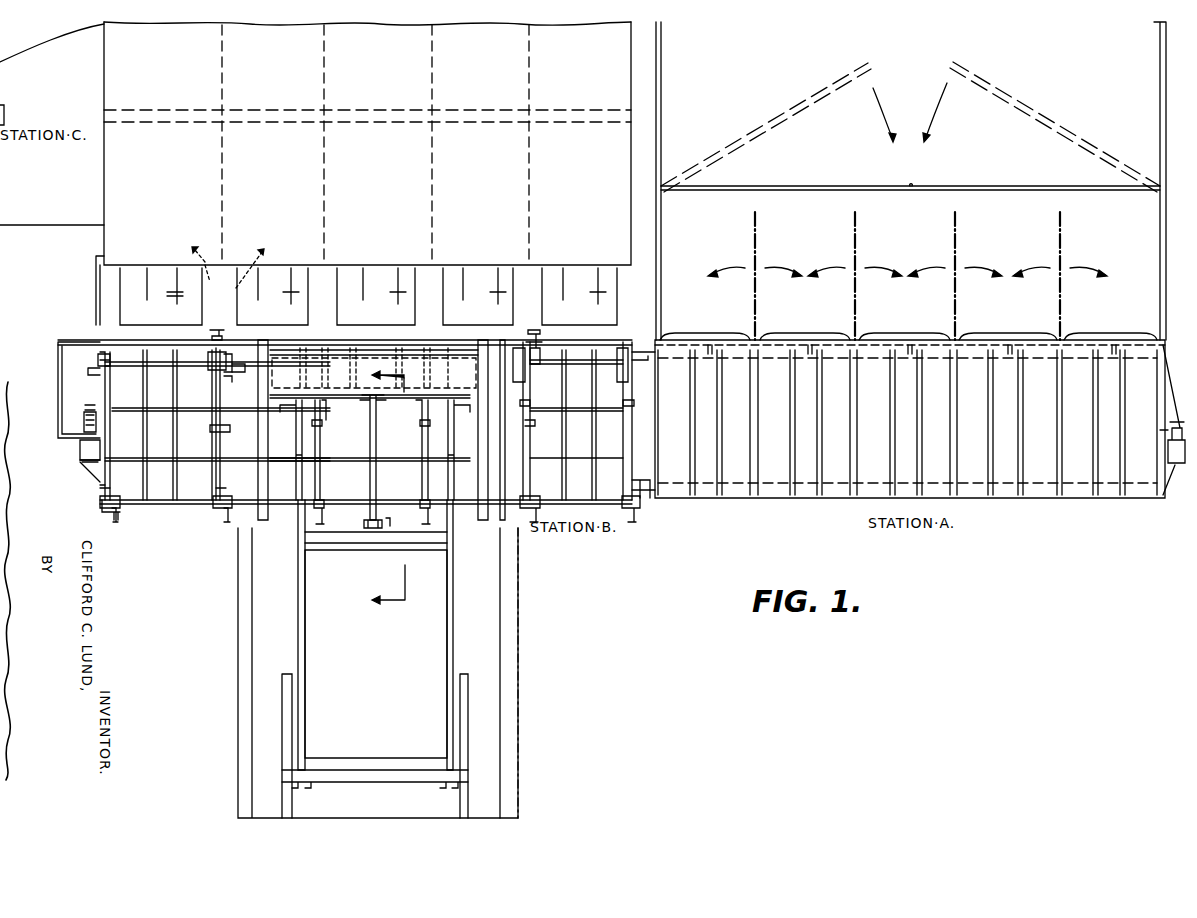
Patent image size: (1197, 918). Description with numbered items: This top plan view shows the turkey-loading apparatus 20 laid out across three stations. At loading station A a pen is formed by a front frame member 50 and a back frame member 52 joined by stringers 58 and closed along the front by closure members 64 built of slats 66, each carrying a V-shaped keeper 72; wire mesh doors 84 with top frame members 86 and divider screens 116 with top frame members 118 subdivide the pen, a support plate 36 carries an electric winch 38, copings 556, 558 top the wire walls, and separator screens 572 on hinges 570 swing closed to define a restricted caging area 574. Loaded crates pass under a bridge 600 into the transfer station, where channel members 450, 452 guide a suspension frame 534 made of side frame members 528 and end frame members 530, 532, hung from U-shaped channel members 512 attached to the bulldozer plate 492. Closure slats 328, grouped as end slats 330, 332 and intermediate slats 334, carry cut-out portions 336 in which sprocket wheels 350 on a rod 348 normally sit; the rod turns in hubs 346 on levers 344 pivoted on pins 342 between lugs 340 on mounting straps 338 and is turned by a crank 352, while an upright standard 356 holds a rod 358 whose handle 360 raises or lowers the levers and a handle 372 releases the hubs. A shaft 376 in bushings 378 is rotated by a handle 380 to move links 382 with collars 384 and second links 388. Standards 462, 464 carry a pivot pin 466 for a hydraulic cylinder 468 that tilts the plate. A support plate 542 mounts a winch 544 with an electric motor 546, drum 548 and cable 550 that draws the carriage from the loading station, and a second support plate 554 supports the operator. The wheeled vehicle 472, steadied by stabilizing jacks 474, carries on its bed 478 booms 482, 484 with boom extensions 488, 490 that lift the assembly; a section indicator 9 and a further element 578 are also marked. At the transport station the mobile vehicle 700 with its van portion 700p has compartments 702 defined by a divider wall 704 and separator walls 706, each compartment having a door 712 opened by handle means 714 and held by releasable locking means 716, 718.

The mobile vehicle 700 is at (74, 230).
The van portion 700p is at (100, 242).
The vertical divider wall 704 is at (344, 125).
The separator walls 706 is at (528, 178).
The compartments 702 is at (228, 275).
The handle means 714 is at (95, 283).
The door 712 is at (118, 312).
The releasable locking means 716 is at (172, 296).
The releasable locking means 718 is at (182, 296).
The coping 556 is at (662, 148).
The coping 558 is at (1159, 110).
The second turkey-caging area 574 is at (910, 198).
The hinges 570 is at (663, 190).
The separator screens 572 is at (776, 134).
The divider screens 116 is at (758, 254).
The top frame member 118 is at (757, 296).
The front frame member 50 is at (1004, 492).
The stringer 58 is at (758, 496).
The wire mesh door 84 is at (722, 312).
The top frame member 86 is at (684, 334).
The slats 66 is at (907, 422).
The closure members 64 is at (829, 483).
The back frame member 52 is at (1084, 336).
The keeper 72 is at (1126, 336).
The electric winch 38 is at (1168, 449).
The support plate 36 is at (1172, 470).
The loading station A is at (1067, 513).
The bridge 600 is at (646, 496).
The turkey-loading apparatus 20 is at (638, 548).
The closure slats 328 is at (152, 338).
The second horizontal support plate 554 is at (60, 356).
The crank 352 is at (88, 372).
The handle 372 is at (100, 384).
The drum 548 is at (88, 412).
The cable 550 is at (82, 424).
The electric motor 546 is at (80, 447).
The winch 544 is at (80, 461).
The support plate 542 is at (90, 470).
The second link 388 is at (98, 482).
The bushings 378 is at (104, 510).
The handle 380 is at (120, 516).
The link 382 is at (228, 528).
The shaft 376 is at (160, 504).
The collar 384 is at (112, 494).
The cut-out portion 336 is at (105, 426).
The rod 348 is at (160, 370).
The upright standard 356 is at (113, 406).
The rod 358 is at (160, 412).
The lever 344 is at (212, 420).
The lugs 340 is at (214, 430).
The handle 360 is at (105, 436).
The end slat 330 is at (217, 457).
The intermediate slat 334 is at (160, 461).
The end slat 332 is at (192, 461).
The sprocket wheel 350 is at (208, 356).
The mounting strap 338 is at (214, 340).
The hub 346 is at (232, 350).
The side frame members 528 is at (270, 416).
The U-shaped channel members 512 is at (276, 350).
The bulldozer plate 492 is at (306, 350).
The end frame member 532 is at (322, 338).
The section line 9 is at (395, 487).
The support 578 is at (434, 380).
The boom extension 488 is at (286, 460).
The boom extension 490 is at (468, 460).
The end frame member 530 is at (344, 460).
The suspension frame 534 is at (414, 458).
The stabilizing jacks 474 is at (376, 444).
The U-shaped channel member 452 is at (266, 474).
The hydraulic cylinder 468 is at (366, 498).
The standard 462 is at (370, 532).
The standard 464 is at (390, 528).
The pivot pin 466 is at (398, 548).
The pivot pin 342 is at (524, 428).
The U-shaped channel member 450 is at (506, 482).
The wheeled vehicle 472 is at (522, 674).
The bed 478 is at (492, 606).
The boom 482 is at (298, 622).
The boom 484 is at (454, 634).